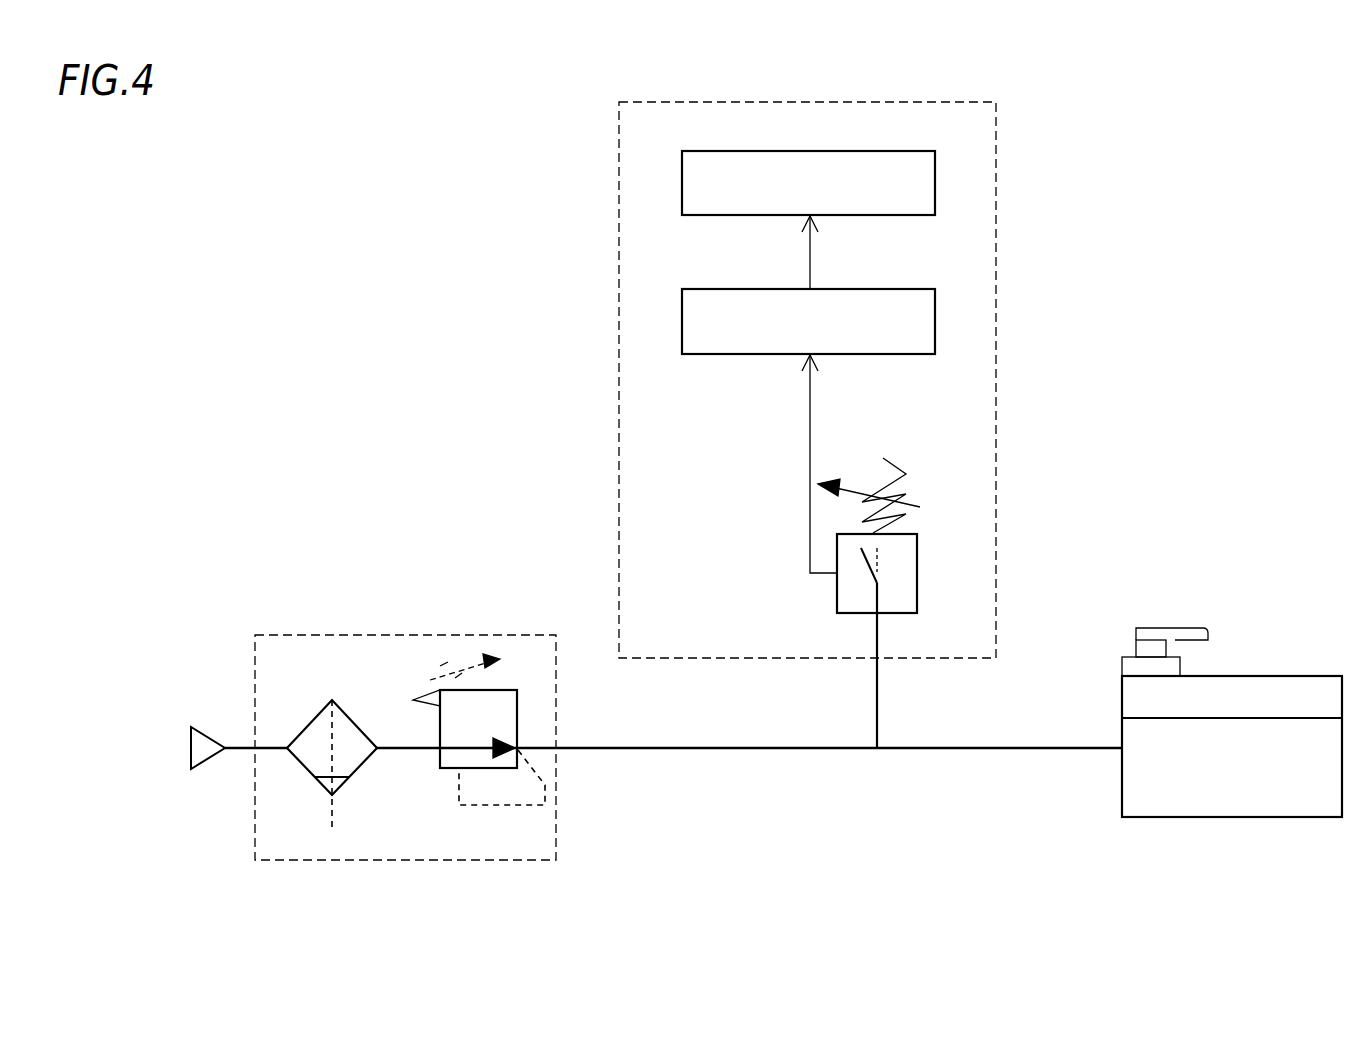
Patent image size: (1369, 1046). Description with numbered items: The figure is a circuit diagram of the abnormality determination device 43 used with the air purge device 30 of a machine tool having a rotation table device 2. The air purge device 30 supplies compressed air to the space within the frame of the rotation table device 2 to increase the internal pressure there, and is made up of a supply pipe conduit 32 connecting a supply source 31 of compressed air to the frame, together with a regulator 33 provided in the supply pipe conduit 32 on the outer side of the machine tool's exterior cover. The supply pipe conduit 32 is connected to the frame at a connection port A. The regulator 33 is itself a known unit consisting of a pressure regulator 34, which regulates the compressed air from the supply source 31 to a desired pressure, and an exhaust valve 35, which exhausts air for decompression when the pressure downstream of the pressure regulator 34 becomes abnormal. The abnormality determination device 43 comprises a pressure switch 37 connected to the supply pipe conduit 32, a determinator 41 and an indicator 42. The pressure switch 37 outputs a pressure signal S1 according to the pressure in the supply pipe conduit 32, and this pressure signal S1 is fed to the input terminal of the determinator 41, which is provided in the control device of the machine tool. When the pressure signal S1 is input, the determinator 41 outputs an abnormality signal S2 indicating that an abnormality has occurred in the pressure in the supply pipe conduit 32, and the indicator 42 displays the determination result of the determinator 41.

The rotation table device 2 is at (1243, 653).
The air purge device 30 is at (242, 728).
The supply source 31 is at (190, 738).
The supply pipe conduit 32 is at (778, 746).
The regulator 33 is at (448, 635).
The pressure regulator 34 is at (313, 713).
The exhaust valve 35 is at (440, 720).
The pressure switch 37 is at (917, 573).
The determinator 41 is at (935, 320).
The indicator 42 is at (935, 180).
The abnormality determination device 43 is at (618, 267).
The pressure signal S1 is at (810, 452).
The abnormality signal S2 is at (810, 261).
The connection port A is at (1120, 746).